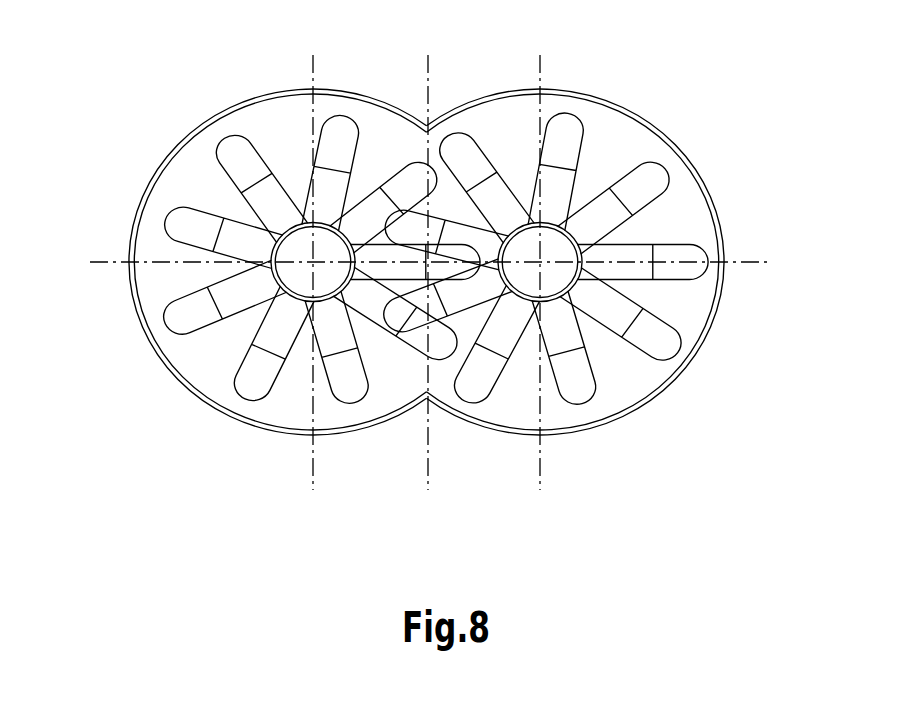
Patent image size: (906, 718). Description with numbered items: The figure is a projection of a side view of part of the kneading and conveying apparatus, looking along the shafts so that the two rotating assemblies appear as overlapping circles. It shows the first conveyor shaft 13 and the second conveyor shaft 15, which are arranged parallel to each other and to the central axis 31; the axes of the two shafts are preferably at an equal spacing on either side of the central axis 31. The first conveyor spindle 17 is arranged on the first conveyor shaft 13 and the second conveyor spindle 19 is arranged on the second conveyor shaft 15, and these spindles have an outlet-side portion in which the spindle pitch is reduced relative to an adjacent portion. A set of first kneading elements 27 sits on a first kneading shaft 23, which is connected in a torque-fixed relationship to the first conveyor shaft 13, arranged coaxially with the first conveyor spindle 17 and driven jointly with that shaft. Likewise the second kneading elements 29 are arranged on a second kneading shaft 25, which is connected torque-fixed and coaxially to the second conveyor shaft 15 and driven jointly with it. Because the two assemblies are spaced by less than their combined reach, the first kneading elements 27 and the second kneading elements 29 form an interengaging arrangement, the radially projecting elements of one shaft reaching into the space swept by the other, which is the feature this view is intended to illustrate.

The first conveyor shaft 13 is at (540, 405).
The second conveyor shaft 15 is at (315, 408).
The first conveyor spindle 17 is at (623, 114).
The second conveyor spindle 19 is at (155, 188).
The first kneading shaft 23 is at (576, 246).
The second kneading shaft 25 is at (319, 261).
The first kneading elements 27 is at (643, 180).
The second kneading elements 29 is at (236, 147).
The central axis 31 is at (455, 175).